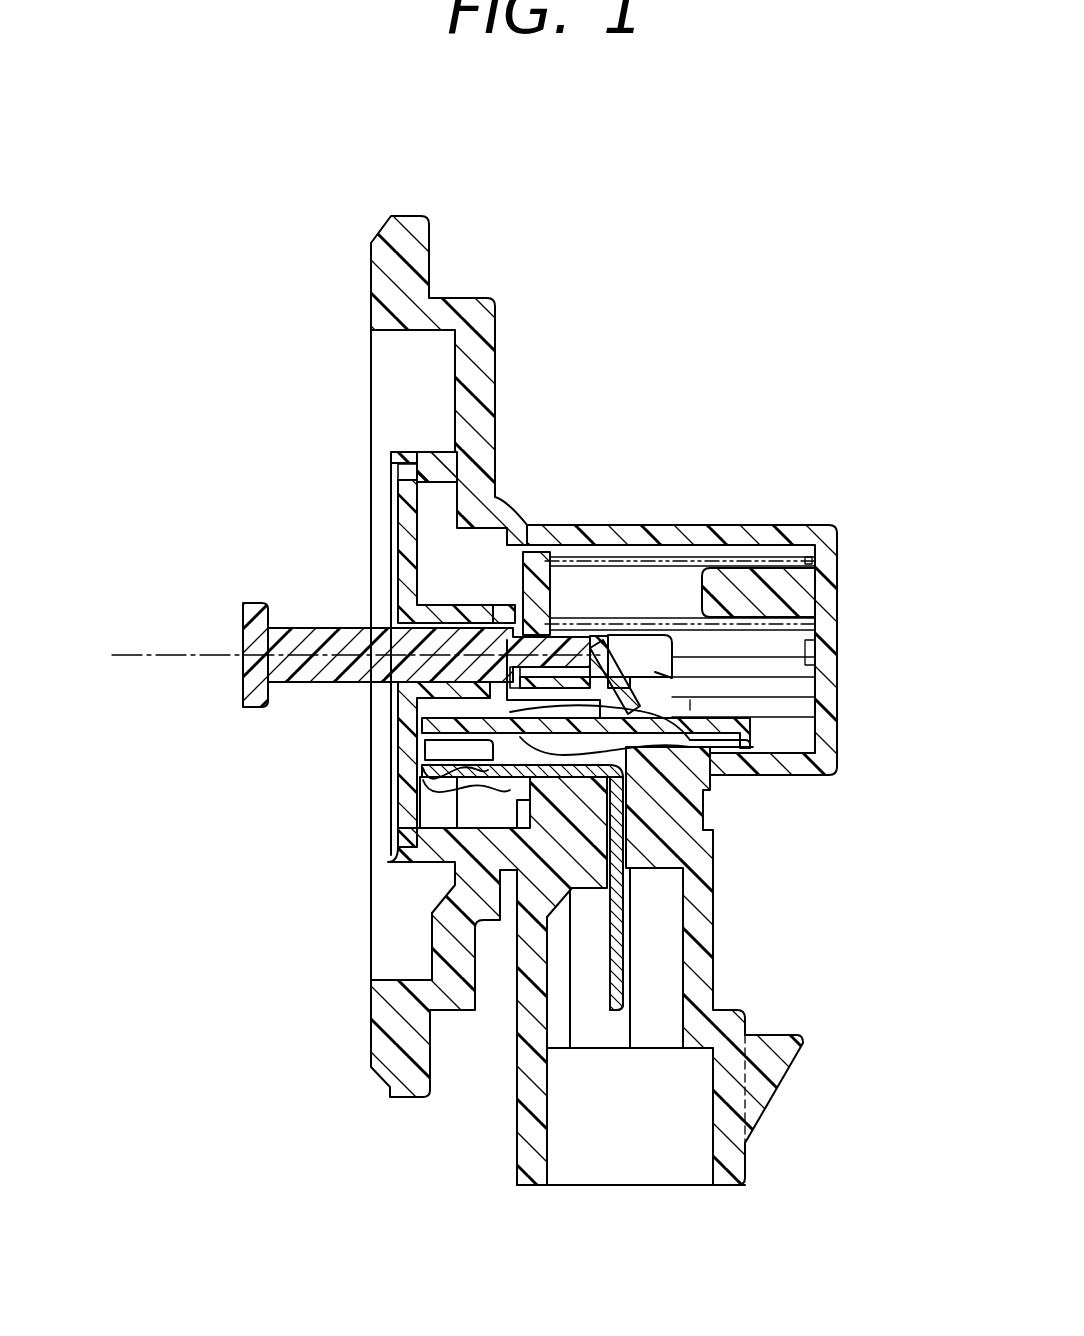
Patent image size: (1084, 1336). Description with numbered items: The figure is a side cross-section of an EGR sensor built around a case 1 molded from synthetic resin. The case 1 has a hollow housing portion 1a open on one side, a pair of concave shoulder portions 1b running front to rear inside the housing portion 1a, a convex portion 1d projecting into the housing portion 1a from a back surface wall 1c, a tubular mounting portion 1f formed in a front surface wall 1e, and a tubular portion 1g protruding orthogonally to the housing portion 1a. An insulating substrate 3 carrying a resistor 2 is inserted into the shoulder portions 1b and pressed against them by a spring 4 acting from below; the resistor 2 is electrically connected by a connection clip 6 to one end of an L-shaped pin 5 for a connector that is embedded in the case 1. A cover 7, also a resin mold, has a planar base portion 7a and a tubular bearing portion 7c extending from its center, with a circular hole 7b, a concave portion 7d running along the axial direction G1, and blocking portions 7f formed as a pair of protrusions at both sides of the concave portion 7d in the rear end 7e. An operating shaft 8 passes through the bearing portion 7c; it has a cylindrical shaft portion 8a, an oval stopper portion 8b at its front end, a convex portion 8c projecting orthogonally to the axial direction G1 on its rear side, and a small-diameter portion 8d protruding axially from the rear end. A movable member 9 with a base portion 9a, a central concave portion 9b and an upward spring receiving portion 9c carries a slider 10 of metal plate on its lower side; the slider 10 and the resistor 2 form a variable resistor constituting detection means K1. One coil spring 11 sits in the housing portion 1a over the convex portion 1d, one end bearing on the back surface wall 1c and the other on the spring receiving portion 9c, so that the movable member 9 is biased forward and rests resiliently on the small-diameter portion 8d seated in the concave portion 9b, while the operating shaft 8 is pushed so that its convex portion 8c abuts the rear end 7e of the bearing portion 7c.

The case 1 is at (438, 242).
The hollow housing portion 1a is at (785, 648).
The concave shoulder portions 1b is at (822, 742).
The back surface wall 1c is at (842, 533).
The convex portion 1d is at (785, 560).
The front surface wall 1e is at (480, 352).
The tubular mounting portion 1f is at (435, 448).
The tubular portion 1g is at (706, 963).
The resistor 2 is at (752, 750).
The insulating substrate 3 is at (690, 750).
The spring 4 is at (800, 775).
The L-shaped pin for connector 5 is at (616, 1014).
The connection clip 6 is at (445, 770).
The cover 7 is at (386, 508).
The planar base portion 7a is at (395, 548).
The circular hole 7b is at (400, 692).
The tubular bearing portion 7c is at (497, 548).
The concave portion 7d is at (385, 640).
The rear end 7e is at (530, 550).
The blocking portions 7f is at (588, 562).
The operating shaft 8 is at (240, 714).
The cylindrical shaft portion 8a is at (307, 678).
The oval stopper portion 8b is at (247, 600).
The convex portion 8c is at (672, 893).
The small-diameter portion 8d is at (635, 552).
The movable member 9 is at (642, 642).
The base portion 9a is at (800, 640).
The concave portion 9b is at (665, 560).
The spring receiving portion 9c is at (610, 560).
The slider 10 is at (683, 812).
The coil spring 11 is at (818, 562).
The detection means K1 is at (692, 705).
The axial direction G1 is at (120, 660).